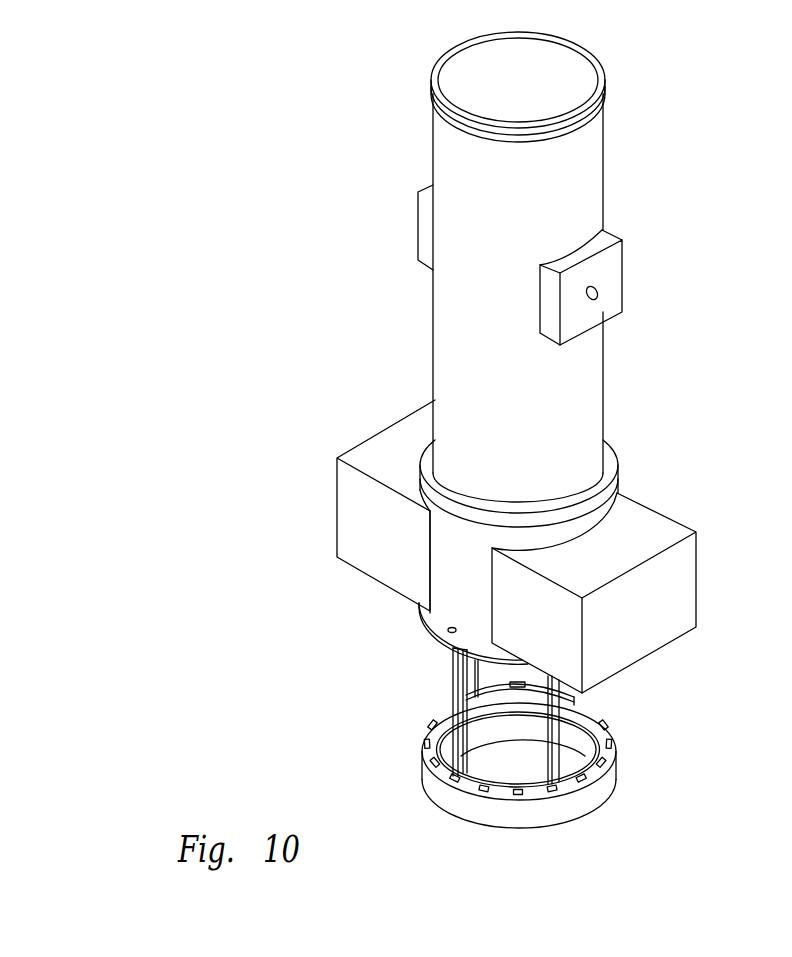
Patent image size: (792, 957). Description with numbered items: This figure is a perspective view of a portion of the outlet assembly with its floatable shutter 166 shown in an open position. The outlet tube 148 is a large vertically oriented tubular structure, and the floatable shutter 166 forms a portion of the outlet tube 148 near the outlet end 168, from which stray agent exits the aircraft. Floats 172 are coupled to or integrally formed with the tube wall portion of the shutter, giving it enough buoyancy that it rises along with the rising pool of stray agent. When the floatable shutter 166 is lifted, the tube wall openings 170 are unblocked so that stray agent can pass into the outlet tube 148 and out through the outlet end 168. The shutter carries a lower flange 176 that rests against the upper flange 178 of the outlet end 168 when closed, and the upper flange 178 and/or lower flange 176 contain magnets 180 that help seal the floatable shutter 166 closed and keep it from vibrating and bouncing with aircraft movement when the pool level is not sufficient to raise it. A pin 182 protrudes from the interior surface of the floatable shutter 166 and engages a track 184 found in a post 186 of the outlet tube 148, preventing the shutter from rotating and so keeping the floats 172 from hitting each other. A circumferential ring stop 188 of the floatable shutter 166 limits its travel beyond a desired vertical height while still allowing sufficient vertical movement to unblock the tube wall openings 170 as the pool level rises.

The outlet tube 148 is at (582, 188).
The floatable shutter 166 is at (607, 517).
The outlet end 168 is at (522, 827).
The tube wall opening 170 is at (614, 757).
The float 172 is at (350, 508).
The lower flange 176 is at (440, 640).
The upper flange 178 is at (430, 768).
The magnet 180 is at (425, 730).
The pin 182 is at (427, 620).
The track 184 is at (448, 710).
The post 186 is at (453, 675).
The circumferential ring stop 188 is at (619, 466).